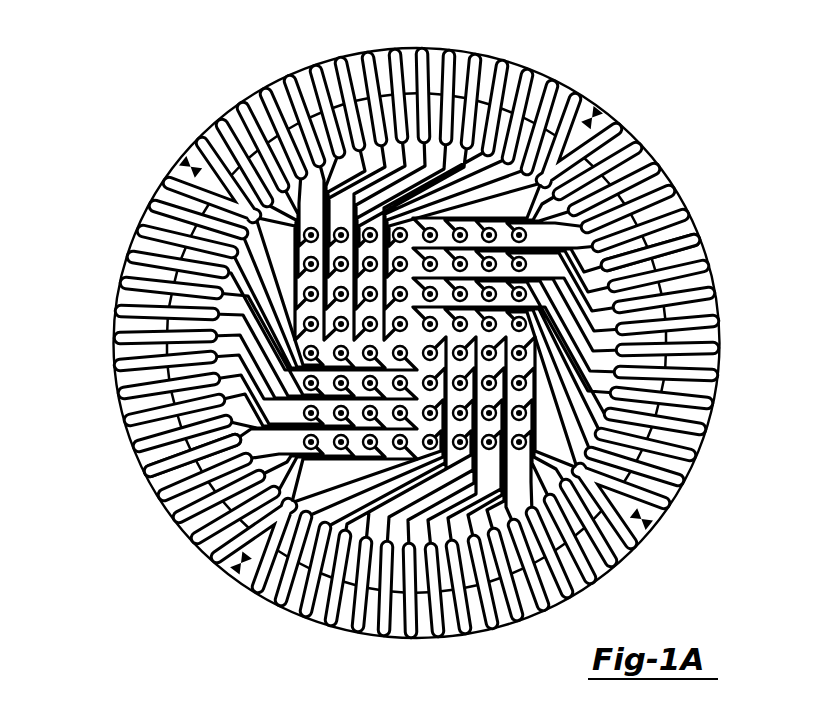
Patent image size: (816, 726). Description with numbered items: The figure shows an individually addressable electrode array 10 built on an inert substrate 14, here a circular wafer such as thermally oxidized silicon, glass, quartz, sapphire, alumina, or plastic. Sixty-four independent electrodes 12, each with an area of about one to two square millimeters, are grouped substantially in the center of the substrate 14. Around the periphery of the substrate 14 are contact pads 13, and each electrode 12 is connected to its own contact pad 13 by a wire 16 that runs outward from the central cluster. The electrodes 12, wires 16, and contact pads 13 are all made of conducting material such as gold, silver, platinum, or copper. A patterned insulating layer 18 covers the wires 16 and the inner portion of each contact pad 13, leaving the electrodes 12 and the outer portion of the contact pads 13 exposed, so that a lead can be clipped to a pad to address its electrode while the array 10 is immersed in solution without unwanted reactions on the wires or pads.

The individually addressable electrode array 10 is at (106, 167).
The electrodes 12 is at (303, 324).
The contact pads 13 is at (684, 238).
The substrate 14 is at (645, 151).
The wires 16 is at (160, 463).
The insulating layer 18 is at (633, 470).